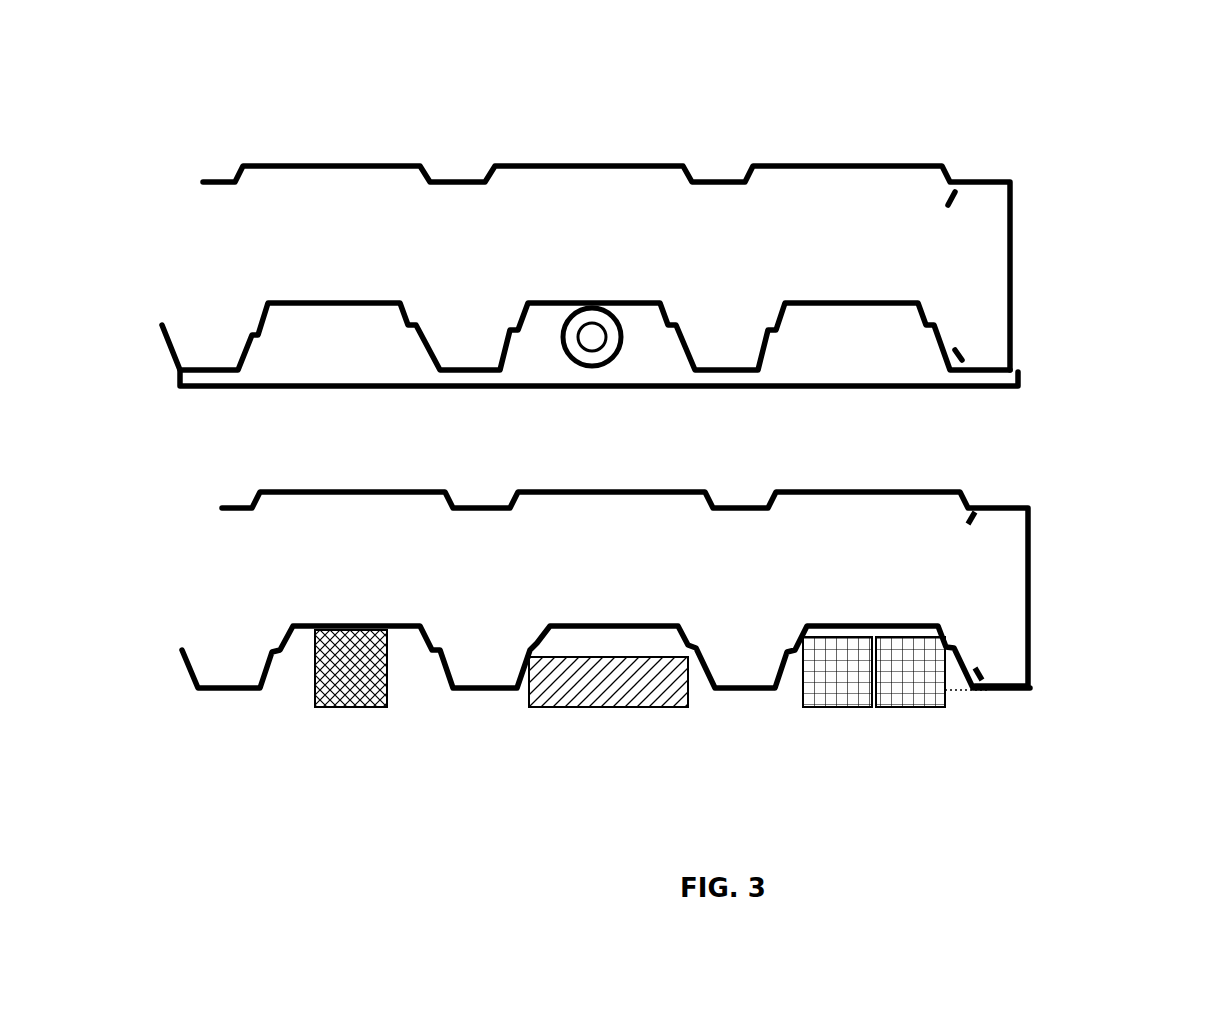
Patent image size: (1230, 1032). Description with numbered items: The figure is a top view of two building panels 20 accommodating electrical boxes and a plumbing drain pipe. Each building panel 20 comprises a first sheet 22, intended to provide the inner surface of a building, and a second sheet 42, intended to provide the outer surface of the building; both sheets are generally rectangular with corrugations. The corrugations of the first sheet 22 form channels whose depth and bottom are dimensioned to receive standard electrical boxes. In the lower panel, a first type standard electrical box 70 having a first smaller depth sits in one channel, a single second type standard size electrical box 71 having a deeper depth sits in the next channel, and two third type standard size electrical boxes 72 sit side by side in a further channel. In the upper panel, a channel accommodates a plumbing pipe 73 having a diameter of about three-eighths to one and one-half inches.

The building panel 20 is at (686, 418).
The first sheet 22 is at (213, 635).
The second sheet 42 is at (623, 490).
The first type standard electrical box 70 is at (358, 680).
The second type standard size electrical box 71 is at (625, 683).
The third type standard size electrical box 72 is at (837, 680).
The plumbing pipe 73 is at (562, 352).